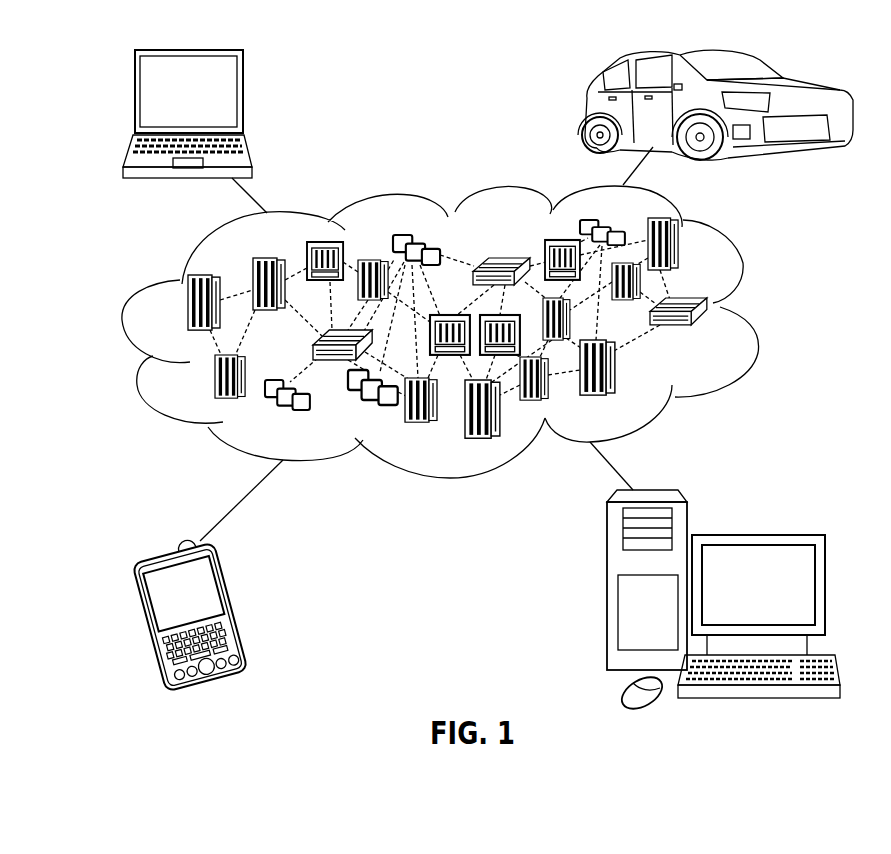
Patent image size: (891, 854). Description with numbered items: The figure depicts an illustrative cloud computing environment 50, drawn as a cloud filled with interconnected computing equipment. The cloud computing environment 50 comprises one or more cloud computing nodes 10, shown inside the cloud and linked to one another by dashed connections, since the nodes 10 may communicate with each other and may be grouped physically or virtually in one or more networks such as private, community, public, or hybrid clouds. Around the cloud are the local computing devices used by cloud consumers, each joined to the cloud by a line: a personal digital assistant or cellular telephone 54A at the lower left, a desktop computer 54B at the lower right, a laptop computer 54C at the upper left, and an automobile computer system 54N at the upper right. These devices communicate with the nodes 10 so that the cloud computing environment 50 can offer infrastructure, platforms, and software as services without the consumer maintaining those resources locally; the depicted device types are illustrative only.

The cloud computing nodes 10 is at (714, 336).
The cloud computing environment 50 is at (757, 310).
The personal digital assistant (PDA) or cellular telephone 54A is at (235, 608).
The desktop computer 54B is at (757, 533).
The laptop computer 54C is at (244, 99).
The automobile computer system 54N is at (583, 110).